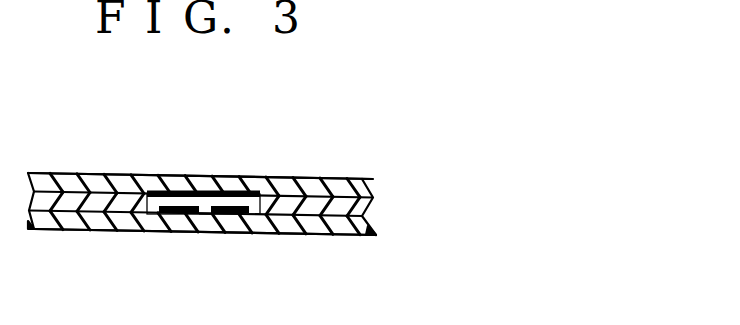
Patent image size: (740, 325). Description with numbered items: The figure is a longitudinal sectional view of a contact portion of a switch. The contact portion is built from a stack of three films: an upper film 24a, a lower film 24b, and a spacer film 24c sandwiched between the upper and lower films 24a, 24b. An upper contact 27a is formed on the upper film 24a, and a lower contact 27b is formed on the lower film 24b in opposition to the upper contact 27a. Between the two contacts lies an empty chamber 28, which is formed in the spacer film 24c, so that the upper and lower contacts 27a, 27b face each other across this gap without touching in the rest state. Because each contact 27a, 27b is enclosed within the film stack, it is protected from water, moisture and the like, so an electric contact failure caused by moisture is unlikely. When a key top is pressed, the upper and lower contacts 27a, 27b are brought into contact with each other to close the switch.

The upper film 24a is at (210, 177).
The lower film 24b is at (323, 228).
The spacer film 24c is at (372, 203).
The upper contact 27a is at (162, 176).
The lower contact 27b is at (176, 213).
The empty chamber 28 is at (202, 214).